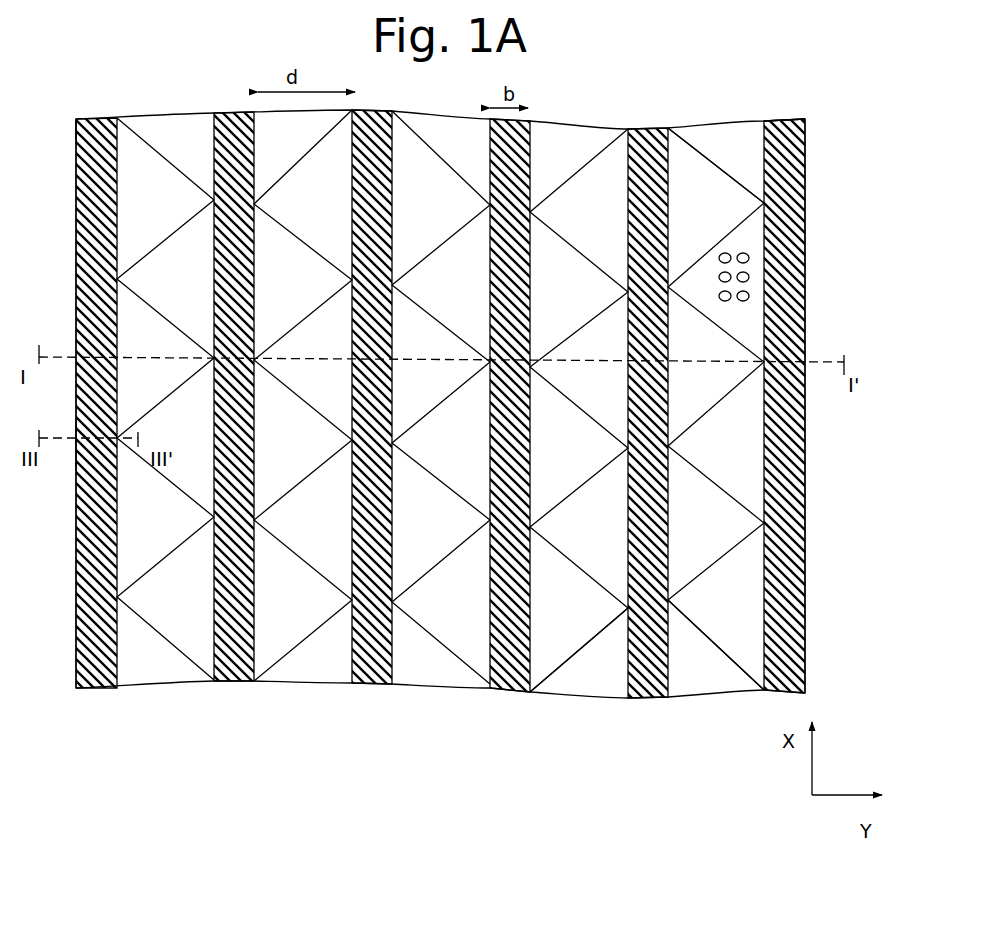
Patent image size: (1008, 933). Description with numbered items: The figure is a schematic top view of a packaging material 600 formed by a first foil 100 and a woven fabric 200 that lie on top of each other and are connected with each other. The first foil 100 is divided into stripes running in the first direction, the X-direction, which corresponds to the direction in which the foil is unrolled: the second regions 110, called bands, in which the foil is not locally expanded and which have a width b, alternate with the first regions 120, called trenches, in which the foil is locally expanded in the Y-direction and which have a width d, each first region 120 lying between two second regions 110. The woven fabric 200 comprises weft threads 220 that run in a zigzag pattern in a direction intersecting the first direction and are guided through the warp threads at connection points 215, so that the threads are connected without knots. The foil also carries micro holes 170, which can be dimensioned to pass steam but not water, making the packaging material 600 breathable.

The first foil 100 is at (76, 130).
The second regions 110 is at (90, 690).
The first regions 120 is at (146, 664).
The micro holes 170 is at (746, 290).
The woven fabric 200 is at (720, 168).
The connection points 215 is at (78, 448).
The weft threads 220 is at (720, 655).
The packaging material 600 is at (825, 136).